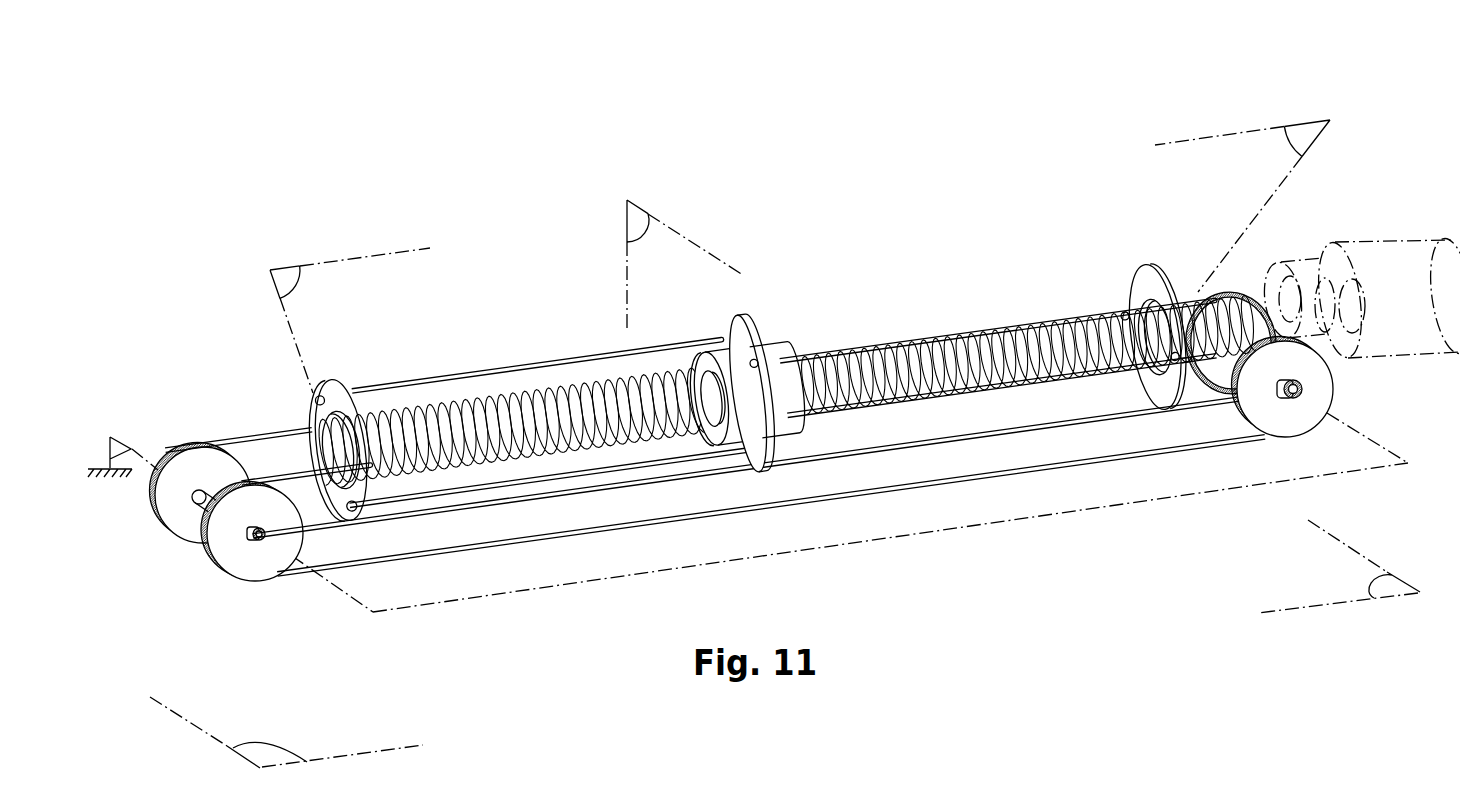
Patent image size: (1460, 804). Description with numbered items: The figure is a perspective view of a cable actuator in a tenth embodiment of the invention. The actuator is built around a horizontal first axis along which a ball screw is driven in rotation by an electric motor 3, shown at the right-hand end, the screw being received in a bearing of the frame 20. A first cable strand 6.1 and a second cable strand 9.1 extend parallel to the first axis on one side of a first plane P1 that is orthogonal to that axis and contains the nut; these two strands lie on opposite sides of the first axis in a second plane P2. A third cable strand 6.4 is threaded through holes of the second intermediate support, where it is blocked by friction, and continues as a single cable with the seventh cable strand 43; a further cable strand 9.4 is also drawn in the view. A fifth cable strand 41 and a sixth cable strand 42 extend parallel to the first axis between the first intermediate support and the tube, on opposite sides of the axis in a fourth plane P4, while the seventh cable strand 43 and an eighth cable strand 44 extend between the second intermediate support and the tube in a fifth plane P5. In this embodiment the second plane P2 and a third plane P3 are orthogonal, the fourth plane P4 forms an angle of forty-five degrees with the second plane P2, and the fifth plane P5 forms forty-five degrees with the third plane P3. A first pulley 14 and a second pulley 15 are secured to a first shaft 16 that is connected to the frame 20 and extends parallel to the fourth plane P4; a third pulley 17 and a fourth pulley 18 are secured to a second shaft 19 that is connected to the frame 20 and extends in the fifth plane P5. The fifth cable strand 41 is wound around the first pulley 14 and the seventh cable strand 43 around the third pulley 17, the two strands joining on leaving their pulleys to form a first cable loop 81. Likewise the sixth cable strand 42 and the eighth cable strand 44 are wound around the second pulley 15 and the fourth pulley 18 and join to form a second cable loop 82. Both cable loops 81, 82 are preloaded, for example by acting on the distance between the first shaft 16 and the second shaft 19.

The electric motor 3 is at (1393, 262).
The first cable strand 6.1 is at (500, 366).
The third cable strand 6.4 is at (987, 390).
The second cable strand 9.1 is at (548, 478).
The fourth spring rod 9.4 is at (952, 337).
The first pulley 14 is at (173, 523).
The second pulley 15 is at (247, 572).
The first shaft 16 is at (203, 500).
The third pulley 17 is at (1253, 318).
The fourth pulley 18 is at (1283, 427).
The second shaft 19 is at (1303, 390).
The frame 20 is at (110, 440).
The fifth cable strand 41 is at (262, 433).
The sixth cable strand 42 is at (308, 527).
The seventh cable strand 43 is at (1196, 293).
The eighth cable strand 44 is at (1210, 394).
The first cable loop 81 is at (983, 435).
The second cable loop 82 is at (895, 489).
The first plane P1 is at (630, 219).
The second plane P2 is at (283, 276).
The third plane P3 is at (1304, 138).
The fourth plane P4 is at (283, 760).
The fifth plane P5 is at (1393, 596).